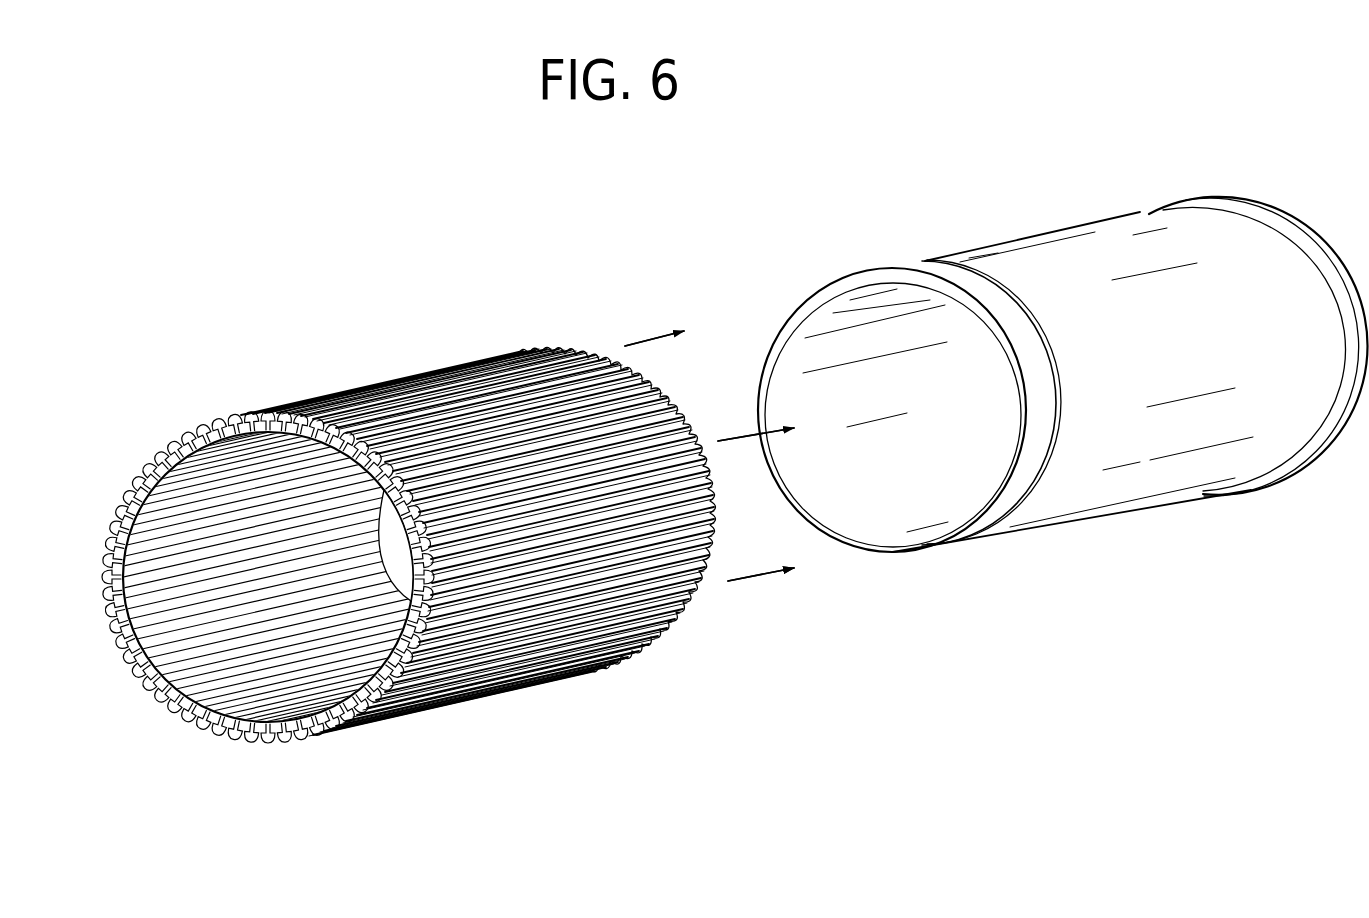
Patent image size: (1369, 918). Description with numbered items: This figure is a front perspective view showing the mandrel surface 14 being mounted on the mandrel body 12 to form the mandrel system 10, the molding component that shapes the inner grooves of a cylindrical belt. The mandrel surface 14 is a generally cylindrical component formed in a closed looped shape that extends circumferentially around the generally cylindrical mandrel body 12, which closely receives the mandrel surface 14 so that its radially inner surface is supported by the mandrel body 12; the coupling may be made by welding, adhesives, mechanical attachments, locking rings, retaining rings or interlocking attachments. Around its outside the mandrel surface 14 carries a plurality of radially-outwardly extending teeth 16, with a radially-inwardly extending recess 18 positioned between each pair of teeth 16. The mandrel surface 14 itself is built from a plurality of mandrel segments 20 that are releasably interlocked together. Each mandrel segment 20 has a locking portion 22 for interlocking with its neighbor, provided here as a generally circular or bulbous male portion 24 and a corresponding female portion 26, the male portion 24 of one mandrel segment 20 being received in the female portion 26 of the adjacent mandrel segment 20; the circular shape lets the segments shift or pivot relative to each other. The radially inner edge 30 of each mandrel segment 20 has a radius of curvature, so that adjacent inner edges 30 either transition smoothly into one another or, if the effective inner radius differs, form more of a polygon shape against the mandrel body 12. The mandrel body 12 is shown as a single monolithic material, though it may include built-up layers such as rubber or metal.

The mandrel system 10 is at (665, 707).
The mandrel body 12 is at (1094, 512).
The mandrel surface 14 is at (466, 348).
The teeth 16 is at (684, 607).
The recesses 18 is at (695, 594).
The mandrel segments 20 is at (688, 440).
The locking portion 22 is at (268, 742).
The male portion 24 is at (318, 732).
The female portion 26 is at (350, 732).
The radially inner edge 30 is at (214, 455).